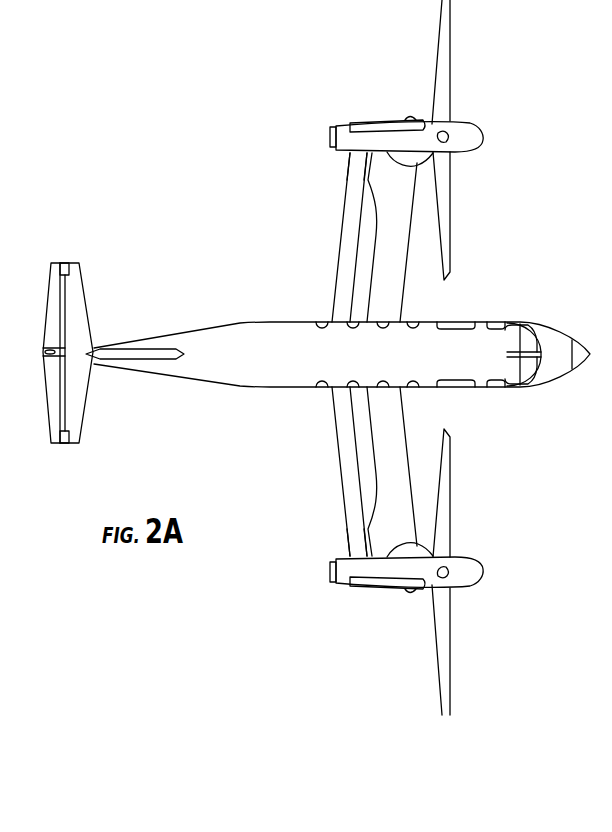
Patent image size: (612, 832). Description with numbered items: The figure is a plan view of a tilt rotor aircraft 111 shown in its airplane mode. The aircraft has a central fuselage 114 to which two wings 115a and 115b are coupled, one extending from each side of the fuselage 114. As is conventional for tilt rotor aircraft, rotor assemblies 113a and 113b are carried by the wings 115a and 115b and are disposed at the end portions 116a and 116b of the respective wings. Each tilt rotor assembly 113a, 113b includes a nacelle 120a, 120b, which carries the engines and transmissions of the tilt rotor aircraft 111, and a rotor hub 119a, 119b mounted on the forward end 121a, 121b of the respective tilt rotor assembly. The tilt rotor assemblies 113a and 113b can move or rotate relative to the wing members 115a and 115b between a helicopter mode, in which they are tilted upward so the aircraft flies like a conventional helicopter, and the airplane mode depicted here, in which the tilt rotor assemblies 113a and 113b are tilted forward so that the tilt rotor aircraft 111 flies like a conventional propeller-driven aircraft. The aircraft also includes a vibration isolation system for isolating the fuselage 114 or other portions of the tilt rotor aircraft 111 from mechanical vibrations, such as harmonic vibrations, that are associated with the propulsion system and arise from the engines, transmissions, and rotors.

The tilt rotor aircraft 111 is at (196, 296).
The fuselage 114 is at (245, 387).
The wing 115a is at (341, 232).
The wing 115b is at (341, 477).
The end portion of wing 116a is at (342, 161).
The end portion of wing 116b is at (342, 548).
The tilt rotor assembly 113a is at (346, 111).
The tilt rotor assembly 113b is at (346, 598).
The nacelle 120a is at (350, 124).
The nacelle 120b is at (350, 585).
The forward end of tilt rotor assembly 121a is at (427, 160).
The forward end of tilt rotor assembly 121b is at (427, 549).
The rotor hub 119a is at (495, 113).
The rotor hub 119b is at (470, 581).